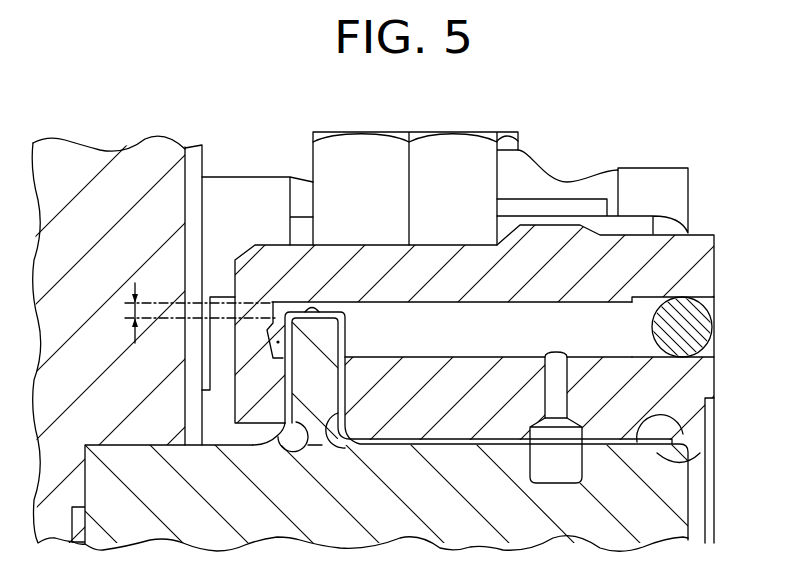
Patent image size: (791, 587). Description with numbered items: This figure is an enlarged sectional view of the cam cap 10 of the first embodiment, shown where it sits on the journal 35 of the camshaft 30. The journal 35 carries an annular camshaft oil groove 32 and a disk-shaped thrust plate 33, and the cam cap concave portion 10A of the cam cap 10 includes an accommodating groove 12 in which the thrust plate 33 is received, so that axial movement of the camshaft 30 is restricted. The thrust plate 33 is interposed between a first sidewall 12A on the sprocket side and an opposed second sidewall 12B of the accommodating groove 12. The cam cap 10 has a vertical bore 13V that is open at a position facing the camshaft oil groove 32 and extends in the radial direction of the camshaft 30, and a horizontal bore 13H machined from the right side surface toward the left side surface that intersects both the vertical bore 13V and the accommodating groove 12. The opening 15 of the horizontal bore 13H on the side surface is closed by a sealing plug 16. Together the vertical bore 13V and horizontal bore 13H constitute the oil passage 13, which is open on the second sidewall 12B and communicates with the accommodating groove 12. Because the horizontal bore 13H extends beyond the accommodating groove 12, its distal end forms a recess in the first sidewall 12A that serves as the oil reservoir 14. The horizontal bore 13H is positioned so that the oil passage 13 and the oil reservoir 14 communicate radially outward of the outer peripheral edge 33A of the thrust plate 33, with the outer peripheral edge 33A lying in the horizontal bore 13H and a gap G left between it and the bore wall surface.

The cam cap 10 is at (472, 252).
The cam cap concave portion 10A is at (693, 453).
The accommodating groove 12 is at (303, 307).
The first sidewall 12A is at (285, 450).
The second sidewall 12B is at (341, 450).
The oil passage 13 is at (495, 344).
The horizontal bore 13H is at (534, 294).
The vertical bore 13V is at (561, 362).
The oil reservoir 14 is at (279, 362).
The opening 15 is at (714, 297).
The sealing plug 16 is at (707, 330).
The camshaft 30 is at (675, 497).
The camshaft oil groove 32 is at (580, 480).
The thrust plate 33 is at (325, 378).
The outer peripheral edge 33A is at (318, 309).
The journal 35 is at (672, 416).
The gap G is at (192, 313).